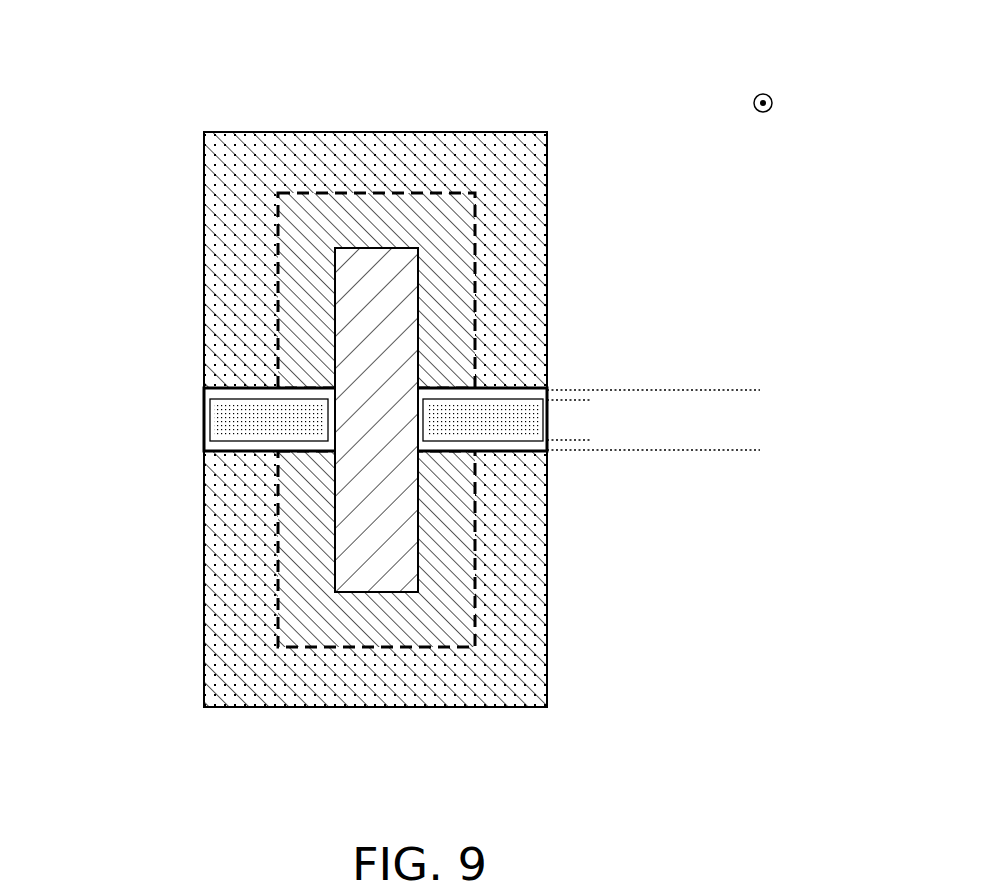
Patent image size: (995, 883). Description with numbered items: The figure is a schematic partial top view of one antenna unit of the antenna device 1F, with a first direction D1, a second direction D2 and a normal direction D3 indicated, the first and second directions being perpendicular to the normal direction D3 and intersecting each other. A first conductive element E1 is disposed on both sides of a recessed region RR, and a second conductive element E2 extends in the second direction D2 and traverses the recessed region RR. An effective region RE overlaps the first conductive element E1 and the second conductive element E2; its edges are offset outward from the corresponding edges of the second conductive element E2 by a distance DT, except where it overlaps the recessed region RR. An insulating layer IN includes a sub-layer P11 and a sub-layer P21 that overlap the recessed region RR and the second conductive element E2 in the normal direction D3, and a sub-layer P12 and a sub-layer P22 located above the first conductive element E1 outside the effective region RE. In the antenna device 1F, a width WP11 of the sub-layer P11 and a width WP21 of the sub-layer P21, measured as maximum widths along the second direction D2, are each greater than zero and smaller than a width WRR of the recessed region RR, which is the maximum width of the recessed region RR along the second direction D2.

The sub-layer P11 is at (295, 415).
The sub-layer P12 is at (457, 419).
The sub-layer P21 is at (442, 413).
The sub-layer P22 is at (523, 173).
The insulating layer IN is at (108, 14).
The first conductive element E1 is at (430, 218).
The second conductive element E2 is at (363, 512).
The effective region RE is at (475, 283).
The recessed region RR is at (205, 447).
The distance DT is at (350, 193).
The width of the sub-layer WP11 is at (625, 420).
The width of the sub-layer WP21 is at (577, 400).
The width of the recessed region WRR is at (747, 390).
The first direction D1 is at (801, 77).
The second direction D2 is at (801, 77).
The normal direction D3 is at (763, 94).
The antenna device 1F is at (658, 761).